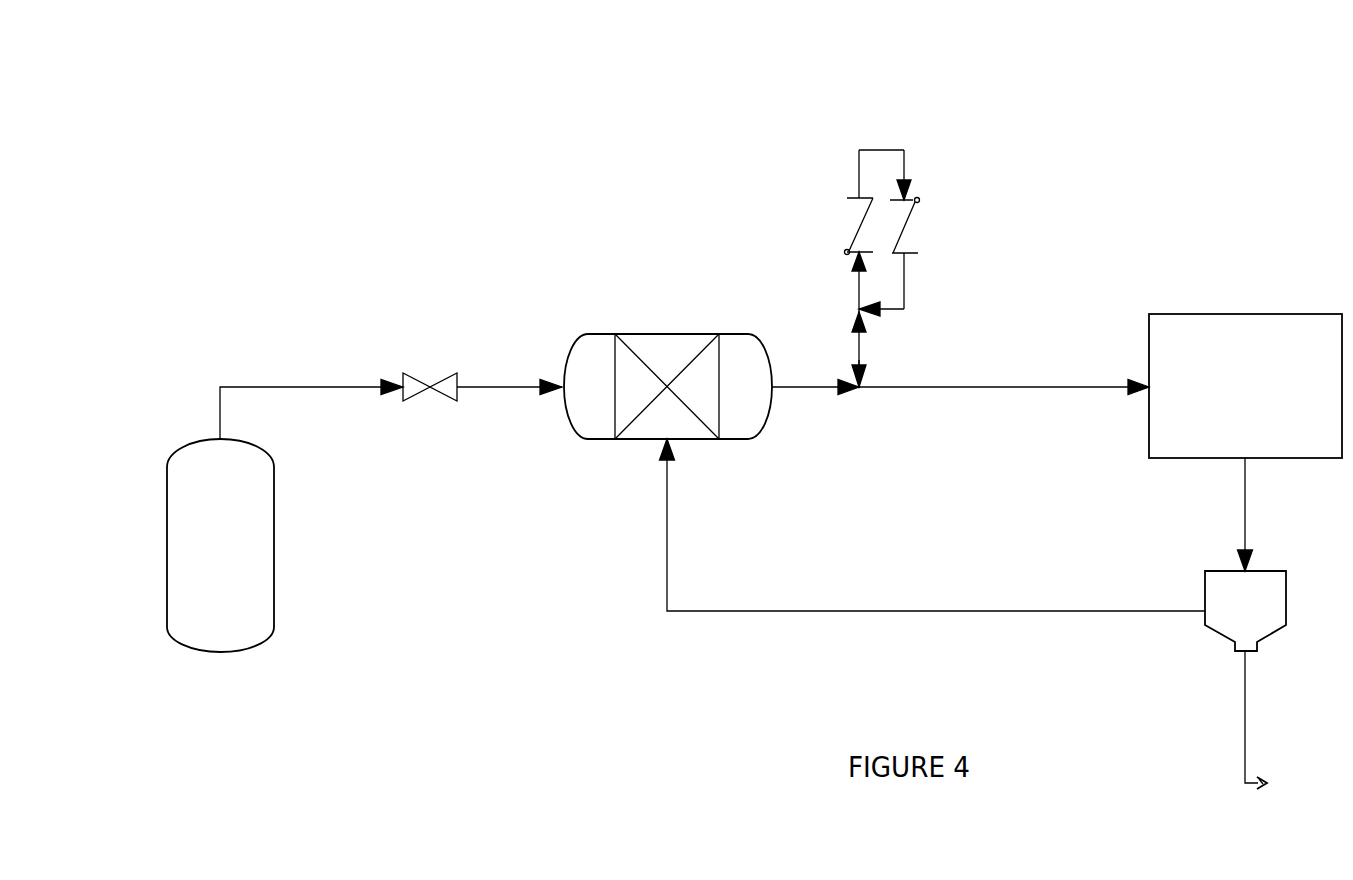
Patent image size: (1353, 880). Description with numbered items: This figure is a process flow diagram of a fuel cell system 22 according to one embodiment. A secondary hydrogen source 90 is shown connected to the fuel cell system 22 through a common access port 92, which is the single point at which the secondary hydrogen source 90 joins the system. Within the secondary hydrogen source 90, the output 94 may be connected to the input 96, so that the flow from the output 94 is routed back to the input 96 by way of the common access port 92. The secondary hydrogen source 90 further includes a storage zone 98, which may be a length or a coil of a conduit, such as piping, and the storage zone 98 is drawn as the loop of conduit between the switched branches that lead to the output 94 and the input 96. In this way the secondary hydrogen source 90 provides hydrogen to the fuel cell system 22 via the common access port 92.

The fuel cell system 22 is at (593, 268).
The secondary hydrogen source 90 is at (814, 186).
The common access port 92 is at (868, 381).
The output 94 is at (877, 311).
The input 96 is at (857, 302).
The storage zone 98 is at (878, 142).